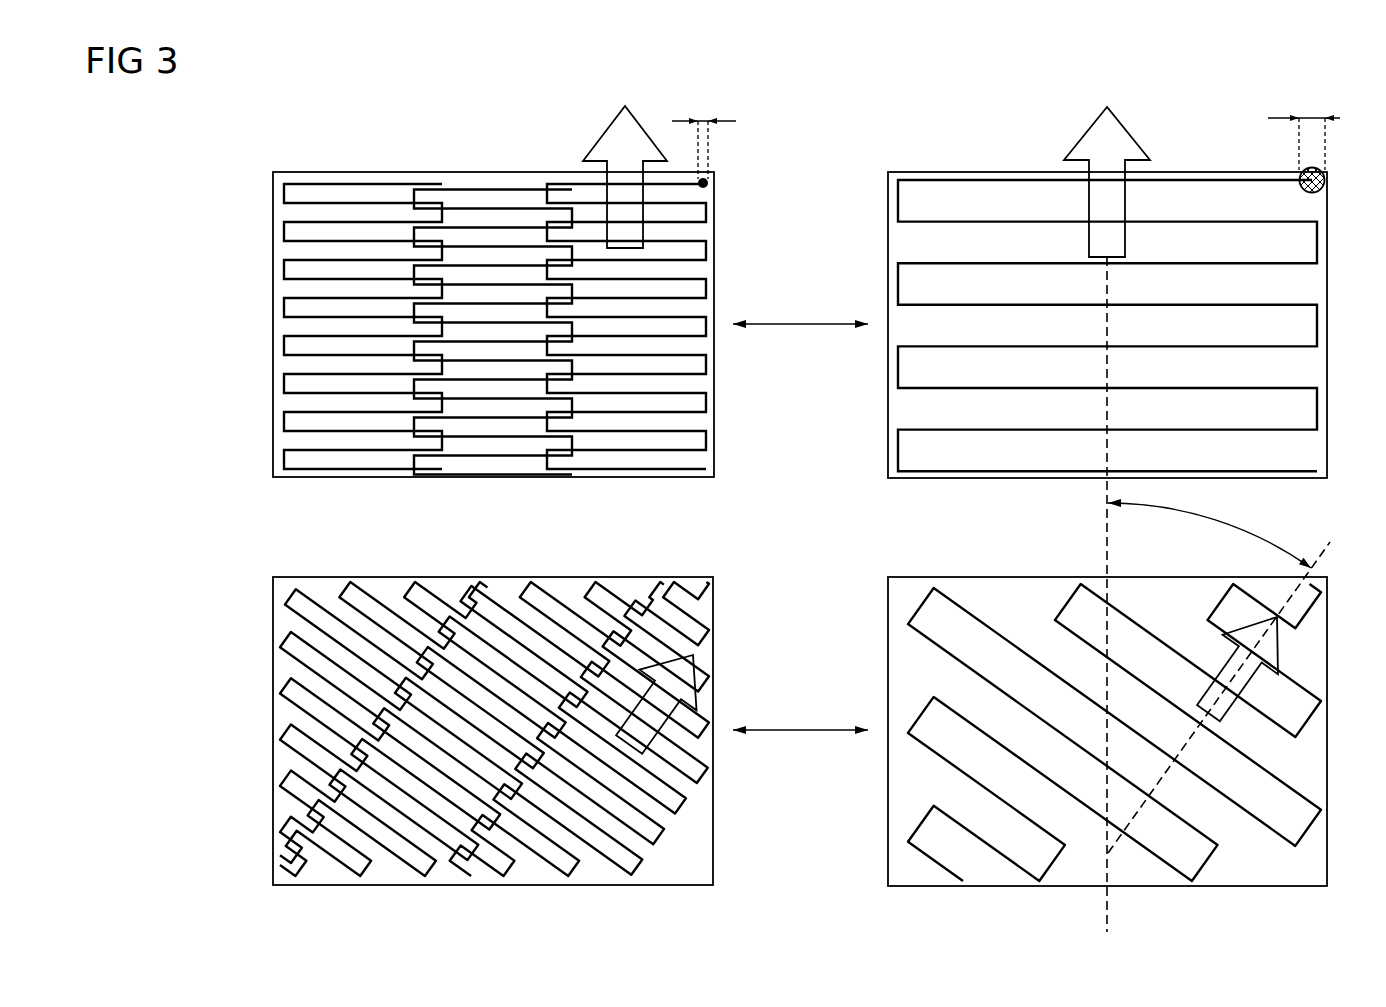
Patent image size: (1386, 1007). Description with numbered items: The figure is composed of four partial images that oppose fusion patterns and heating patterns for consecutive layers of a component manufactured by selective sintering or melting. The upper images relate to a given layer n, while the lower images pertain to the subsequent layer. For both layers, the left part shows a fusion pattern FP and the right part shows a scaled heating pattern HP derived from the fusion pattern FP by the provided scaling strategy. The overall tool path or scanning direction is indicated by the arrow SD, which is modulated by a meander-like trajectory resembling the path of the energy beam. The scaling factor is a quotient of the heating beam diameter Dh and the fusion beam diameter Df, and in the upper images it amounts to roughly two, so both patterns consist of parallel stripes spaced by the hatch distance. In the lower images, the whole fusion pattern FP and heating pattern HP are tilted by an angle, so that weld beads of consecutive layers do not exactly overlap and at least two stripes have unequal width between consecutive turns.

The fusion pattern FP is at (333, 150).
The heating pattern HP is at (935, 150).
The scanning direction SD is at (603, 128).
The fusion beam diameter Df is at (704, 135).
The heating beam diameter Dh is at (1304, 148).
The layer n is at (231, 326).